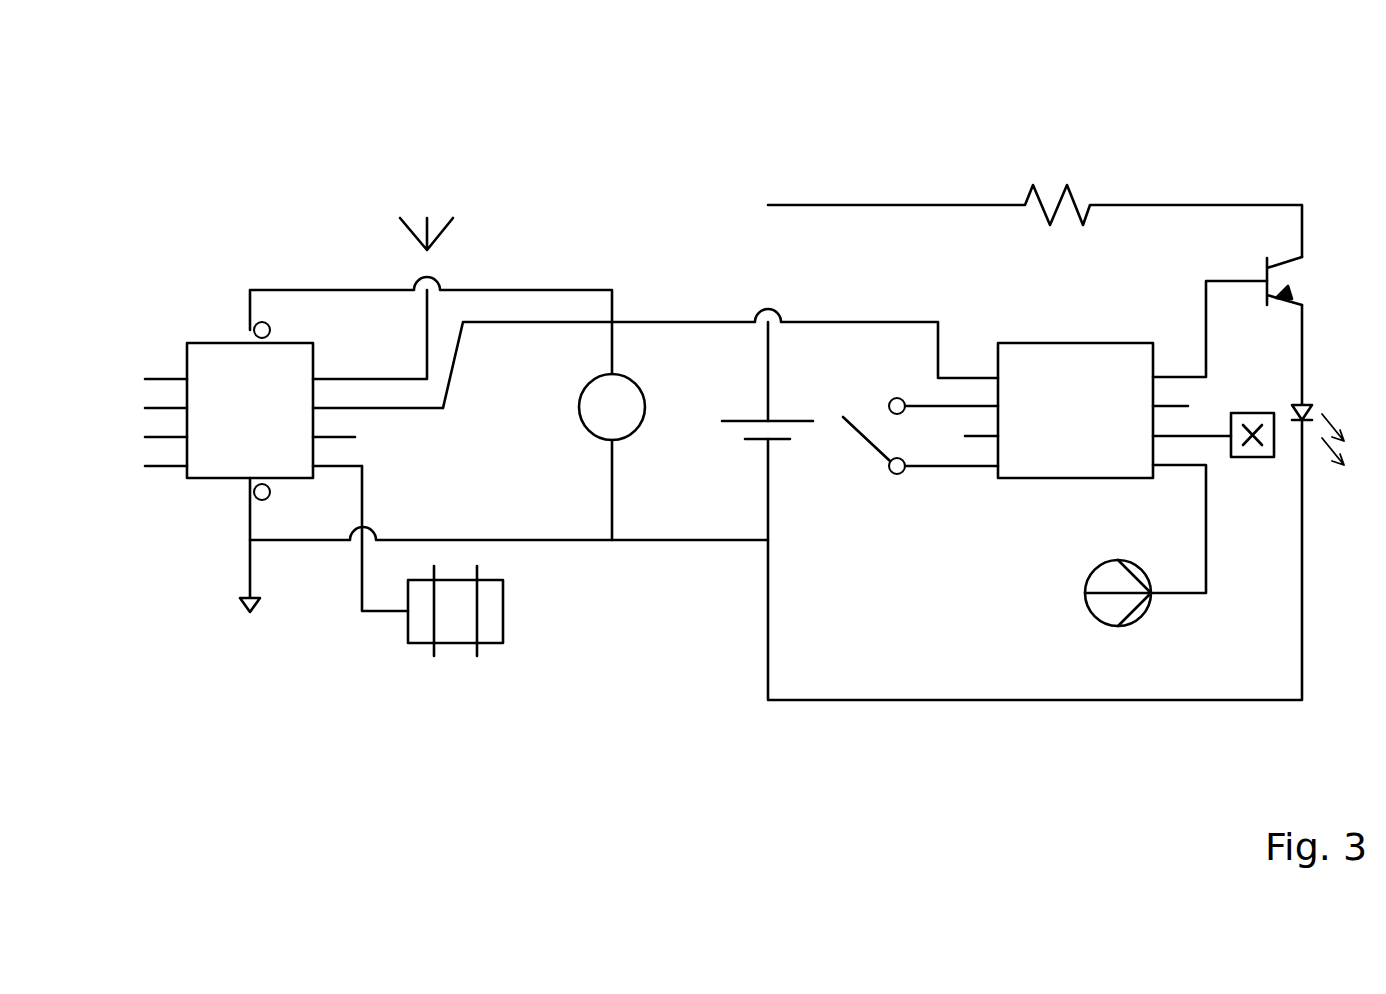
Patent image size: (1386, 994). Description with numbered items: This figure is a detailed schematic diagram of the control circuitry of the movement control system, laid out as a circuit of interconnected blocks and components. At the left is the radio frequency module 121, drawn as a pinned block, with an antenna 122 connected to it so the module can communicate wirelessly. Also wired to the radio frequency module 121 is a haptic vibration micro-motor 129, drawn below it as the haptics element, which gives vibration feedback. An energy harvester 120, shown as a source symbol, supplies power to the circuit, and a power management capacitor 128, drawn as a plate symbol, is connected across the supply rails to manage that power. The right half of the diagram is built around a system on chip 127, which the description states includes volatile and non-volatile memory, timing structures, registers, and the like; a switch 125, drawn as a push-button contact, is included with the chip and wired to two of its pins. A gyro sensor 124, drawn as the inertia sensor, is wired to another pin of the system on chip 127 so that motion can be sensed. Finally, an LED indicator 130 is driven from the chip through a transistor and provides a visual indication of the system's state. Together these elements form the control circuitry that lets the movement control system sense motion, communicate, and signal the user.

The energy harvester 120 is at (590, 432).
The radio frequency module 121 is at (211, 343).
The antenna 122 is at (428, 263).
The gyro sensor 124 is at (1140, 620).
The switch 125 is at (871, 452).
The system on chip 127 is at (1060, 343).
The power management capacitor 128 is at (752, 440).
The haptic vibration micro-motor 129 is at (408, 625).
The LED indicator 130 is at (1307, 405).